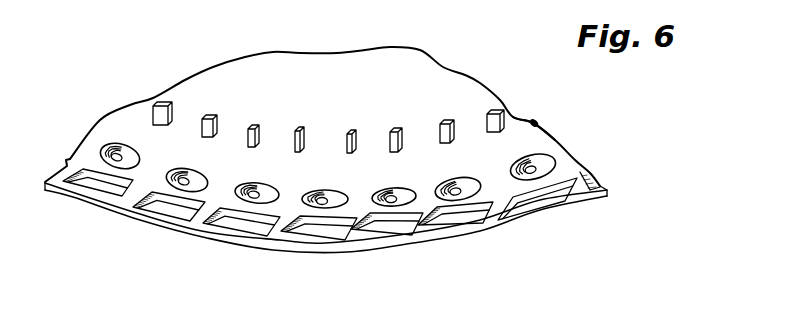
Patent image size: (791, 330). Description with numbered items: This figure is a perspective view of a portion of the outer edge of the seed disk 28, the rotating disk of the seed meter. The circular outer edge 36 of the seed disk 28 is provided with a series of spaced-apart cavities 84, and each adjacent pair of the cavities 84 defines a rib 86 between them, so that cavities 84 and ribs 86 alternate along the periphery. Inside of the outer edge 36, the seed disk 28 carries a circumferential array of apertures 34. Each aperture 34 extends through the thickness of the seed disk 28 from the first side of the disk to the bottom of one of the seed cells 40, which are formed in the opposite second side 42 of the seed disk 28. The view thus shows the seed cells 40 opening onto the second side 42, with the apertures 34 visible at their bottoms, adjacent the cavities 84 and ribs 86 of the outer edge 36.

The seed disk 28 is at (535, 123).
The apertures 34 is at (318, 197).
The circular outer edge 36 is at (237, 242).
The seed cells 40 is at (332, 200).
The second side 42 is at (213, 97).
The cavities 84 is at (538, 207).
The ribs 86 is at (345, 240).